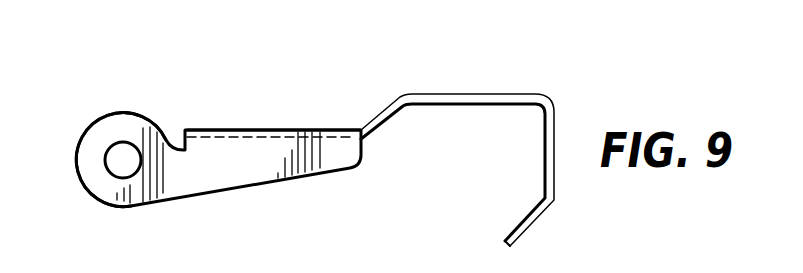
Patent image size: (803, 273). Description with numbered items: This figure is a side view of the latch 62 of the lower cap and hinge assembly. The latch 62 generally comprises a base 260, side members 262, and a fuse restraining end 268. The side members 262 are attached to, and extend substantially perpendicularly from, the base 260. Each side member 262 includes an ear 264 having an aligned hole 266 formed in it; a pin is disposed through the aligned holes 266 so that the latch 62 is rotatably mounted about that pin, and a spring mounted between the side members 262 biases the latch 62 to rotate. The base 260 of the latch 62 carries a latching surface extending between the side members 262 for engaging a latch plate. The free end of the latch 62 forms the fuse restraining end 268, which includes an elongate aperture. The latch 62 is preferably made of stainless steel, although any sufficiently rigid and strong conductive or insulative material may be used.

The latch 62 is at (372, 77).
The base 260 is at (240, 130).
The side members 262 is at (242, 157).
The ears 264 is at (102, 188).
The aligned holes 266 is at (114, 138).
The fuse restraining end 268 is at (545, 98).